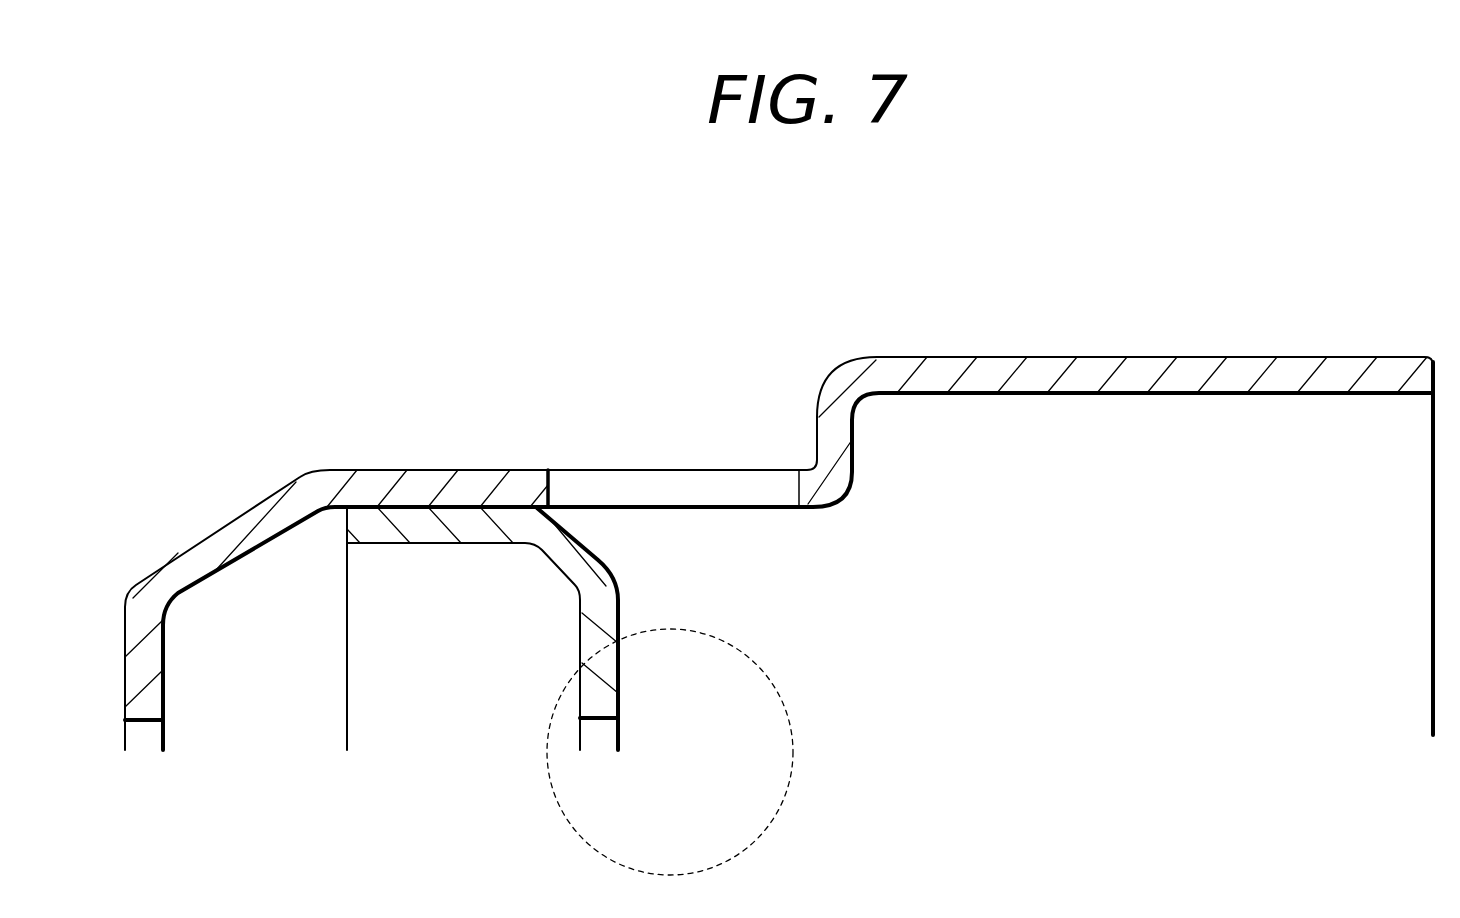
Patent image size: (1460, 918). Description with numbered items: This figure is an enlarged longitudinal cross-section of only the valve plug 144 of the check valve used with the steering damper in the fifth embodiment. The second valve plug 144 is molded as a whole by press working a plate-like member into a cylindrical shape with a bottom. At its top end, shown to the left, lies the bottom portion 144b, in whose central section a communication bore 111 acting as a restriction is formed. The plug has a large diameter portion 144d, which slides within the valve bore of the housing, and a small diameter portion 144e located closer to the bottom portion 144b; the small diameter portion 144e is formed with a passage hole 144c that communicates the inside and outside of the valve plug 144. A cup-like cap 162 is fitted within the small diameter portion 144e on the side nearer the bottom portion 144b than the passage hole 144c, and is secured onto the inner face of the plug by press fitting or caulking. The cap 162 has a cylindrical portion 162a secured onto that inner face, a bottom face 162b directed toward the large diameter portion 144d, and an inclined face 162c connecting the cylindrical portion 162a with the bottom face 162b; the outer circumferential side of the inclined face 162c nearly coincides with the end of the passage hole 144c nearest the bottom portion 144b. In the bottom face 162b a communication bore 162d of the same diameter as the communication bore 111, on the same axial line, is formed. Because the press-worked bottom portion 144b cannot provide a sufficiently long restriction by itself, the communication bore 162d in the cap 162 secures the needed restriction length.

The valve plug 144 is at (719, 228).
The bottom portion 144b is at (155, 662).
The passage hole 144c is at (799, 487).
The large diameter portion 144d is at (1108, 357).
The small diameter portion 144e is at (343, 470).
The cap 162 is at (590, 580).
The cylindrical portion 162a is at (433, 533).
The bottom face 162b is at (620, 663).
The inclined face 162c is at (598, 470).
The communication bore 162d is at (602, 722).
The communication bore 111 is at (145, 723).